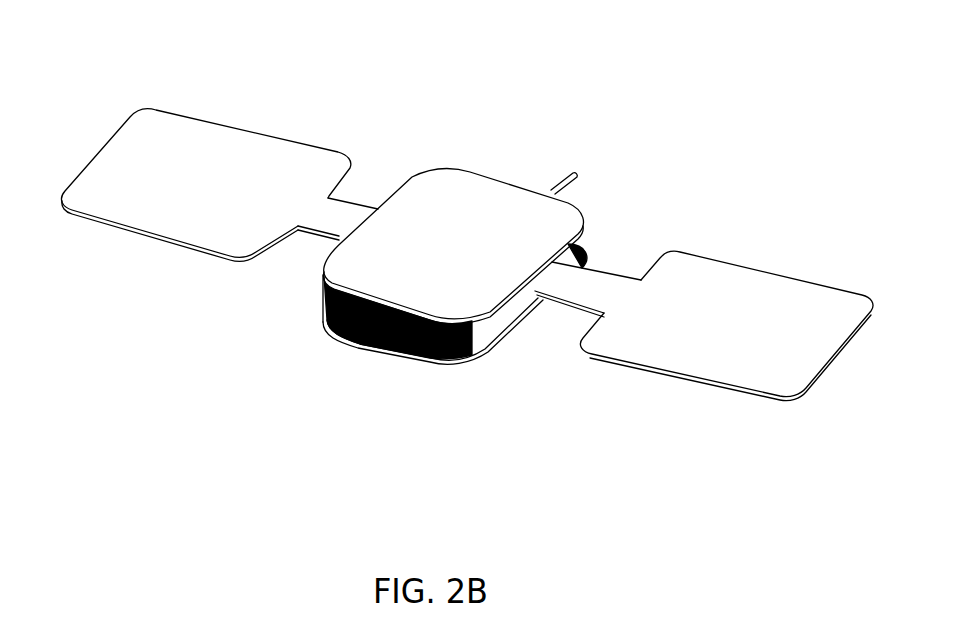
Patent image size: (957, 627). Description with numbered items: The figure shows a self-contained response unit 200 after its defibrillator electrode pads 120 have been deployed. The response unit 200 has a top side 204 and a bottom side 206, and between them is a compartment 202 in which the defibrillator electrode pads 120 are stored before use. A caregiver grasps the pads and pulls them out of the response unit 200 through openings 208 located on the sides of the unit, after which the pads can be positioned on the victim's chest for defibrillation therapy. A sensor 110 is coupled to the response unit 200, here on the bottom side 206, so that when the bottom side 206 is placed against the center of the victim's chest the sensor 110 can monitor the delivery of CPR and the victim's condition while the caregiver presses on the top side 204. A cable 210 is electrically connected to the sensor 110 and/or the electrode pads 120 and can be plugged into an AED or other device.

The self-contained response unit 200 is at (345, 80).
The defibrillator electrode pads 120 is at (183, 210).
The top side 204 is at (440, 260).
The openings 208 is at (393, 185).
The compartment 202 is at (522, 300).
The bottom side 206 is at (493, 352).
The sensor 110 is at (407, 355).
The cable 210 is at (563, 178).